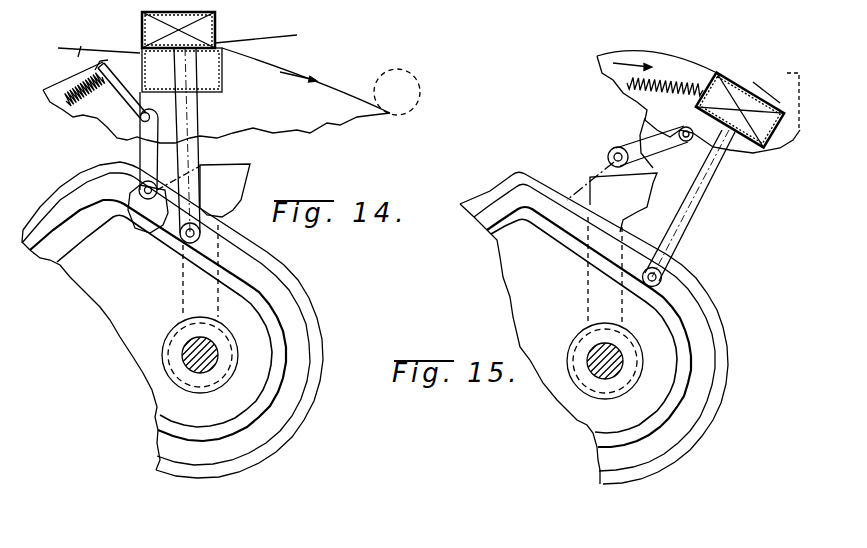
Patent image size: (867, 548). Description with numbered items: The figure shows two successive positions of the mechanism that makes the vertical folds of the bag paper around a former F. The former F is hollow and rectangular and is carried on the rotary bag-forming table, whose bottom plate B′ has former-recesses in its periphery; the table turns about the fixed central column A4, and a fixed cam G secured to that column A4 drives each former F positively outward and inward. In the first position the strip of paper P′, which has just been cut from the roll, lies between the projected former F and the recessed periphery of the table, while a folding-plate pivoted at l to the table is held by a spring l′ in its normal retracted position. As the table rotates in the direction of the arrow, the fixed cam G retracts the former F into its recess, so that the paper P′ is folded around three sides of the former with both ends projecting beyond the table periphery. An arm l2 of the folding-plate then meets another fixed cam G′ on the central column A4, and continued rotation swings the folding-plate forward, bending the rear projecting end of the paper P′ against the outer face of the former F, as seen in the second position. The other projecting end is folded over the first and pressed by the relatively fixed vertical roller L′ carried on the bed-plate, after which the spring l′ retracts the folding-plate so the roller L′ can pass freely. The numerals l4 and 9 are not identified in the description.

In FIG. 14, the former F is at (215, 25).
In FIG. 15, the former F is at (740, 110).
In FIG. 14, the strip of paper P′ is at (98, 61).
In FIG. 14, the spring l′ is at (82, 108).
In FIG. 15, the spring l′ is at (663, 80).
In FIG. 14, the vertical roller L′ is at (120, 96).
In FIG. 15, the vertical roller L′ is at (781, 77).
In FIG. 14, the pivot l is at (177, 145).
In FIG. 15, the pivot l is at (690, 208).
In FIG. 14, the arm of the folding-plate l2 is at (142, 153).
In FIG. 15, the arm of the folding-plate l2 is at (646, 153).
In FIG. 14, the guide block l4 is at (182, 70).
In FIG. 14, the bottom plate B′ is at (216, 89).
In FIG. 15, the bottom plate B′ is at (698, 102).
In FIG. 14, the fixed cam G is at (77, 238).
In FIG. 15, the fixed cam G is at (594, 328).
In FIG. 14, the fixed cam G′ is at (203, 190).
In FIG. 15, the fixed cam G′ is at (612, 175).
In FIG. 14, the rim flange 9 is at (223, 270).
In FIG. 14, the central column A4 is at (214, 344).
In FIG. 15, the central column A4 is at (605, 361).